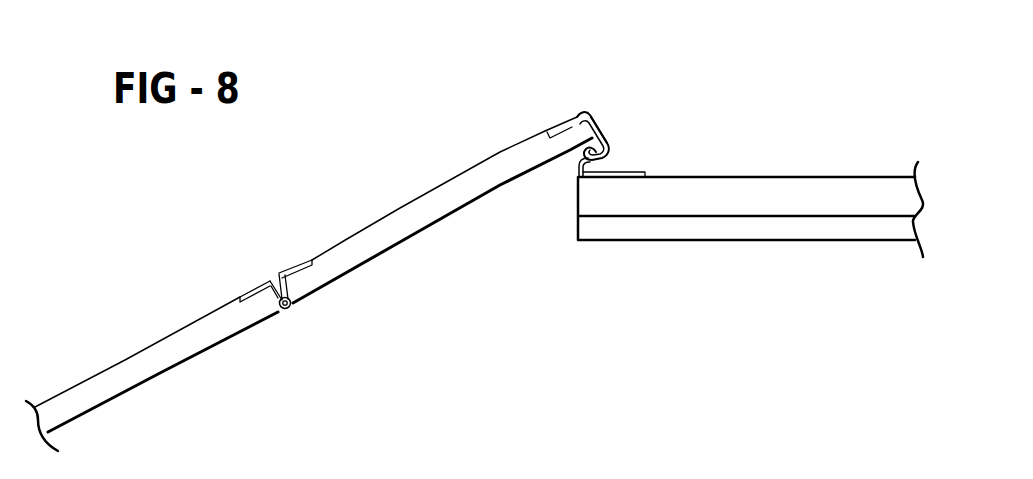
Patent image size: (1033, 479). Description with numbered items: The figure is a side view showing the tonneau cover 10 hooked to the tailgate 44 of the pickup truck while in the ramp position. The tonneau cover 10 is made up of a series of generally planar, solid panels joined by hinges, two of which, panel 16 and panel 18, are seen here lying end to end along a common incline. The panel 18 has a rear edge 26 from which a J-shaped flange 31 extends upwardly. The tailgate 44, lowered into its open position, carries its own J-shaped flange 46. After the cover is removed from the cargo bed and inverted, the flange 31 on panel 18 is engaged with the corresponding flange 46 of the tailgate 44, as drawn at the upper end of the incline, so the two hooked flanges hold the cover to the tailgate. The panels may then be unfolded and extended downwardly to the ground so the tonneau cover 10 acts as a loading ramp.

The tonneau cover 10 is at (159, 325).
The panel 16 is at (182, 364).
The panel 18 is at (347, 238).
The rear edge 26 is at (600, 127).
The J-shaped flange 31 is at (610, 135).
The tailgate 44 is at (715, 242).
The J-shaped flange 46 is at (578, 163).